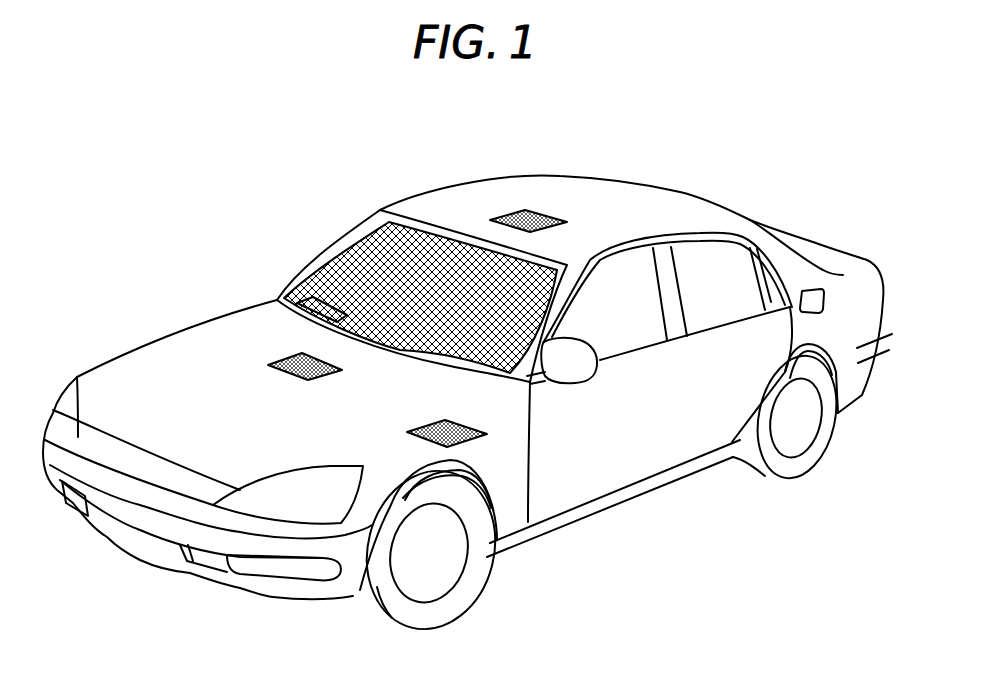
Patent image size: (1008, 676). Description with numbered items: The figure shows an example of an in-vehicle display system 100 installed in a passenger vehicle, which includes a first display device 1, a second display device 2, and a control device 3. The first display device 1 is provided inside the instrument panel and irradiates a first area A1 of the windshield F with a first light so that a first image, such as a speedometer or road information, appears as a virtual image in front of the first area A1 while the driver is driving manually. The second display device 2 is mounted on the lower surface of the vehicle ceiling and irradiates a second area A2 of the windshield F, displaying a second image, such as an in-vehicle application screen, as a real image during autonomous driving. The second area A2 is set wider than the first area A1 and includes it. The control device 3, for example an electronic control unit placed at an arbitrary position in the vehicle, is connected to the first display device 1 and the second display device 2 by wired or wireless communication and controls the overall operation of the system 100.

The in-vehicle display system 100 is at (258, 155).
The first display device 1 is at (280, 353).
The second display device 2 is at (543, 210).
The control device 3 is at (485, 435).
The windshield F is at (372, 229).
The first area A1 is at (297, 298).
The second area A2 is at (350, 262).